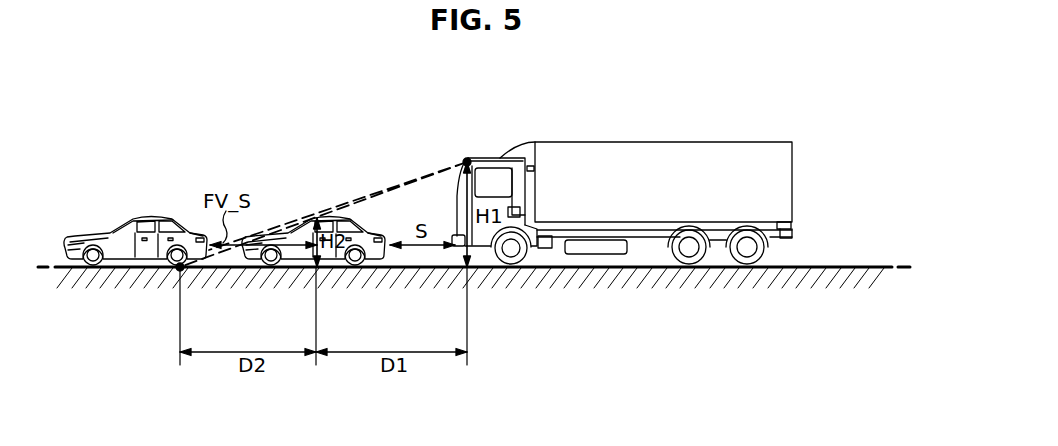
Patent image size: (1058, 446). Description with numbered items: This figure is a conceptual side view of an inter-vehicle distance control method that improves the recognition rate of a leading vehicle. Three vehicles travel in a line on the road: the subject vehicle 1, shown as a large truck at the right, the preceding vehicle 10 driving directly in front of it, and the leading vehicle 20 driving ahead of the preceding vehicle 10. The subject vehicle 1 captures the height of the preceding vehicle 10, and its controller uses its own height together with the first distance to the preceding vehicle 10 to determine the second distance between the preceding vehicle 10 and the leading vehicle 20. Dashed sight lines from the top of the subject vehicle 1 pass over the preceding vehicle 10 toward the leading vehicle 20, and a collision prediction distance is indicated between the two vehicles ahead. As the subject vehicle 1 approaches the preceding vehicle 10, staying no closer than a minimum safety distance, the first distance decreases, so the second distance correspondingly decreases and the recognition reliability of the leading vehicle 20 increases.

The subject vehicle 1 is at (625, 151).
The preceding vehicle 10 is at (346, 216).
The leading vehicle 20 is at (131, 224).